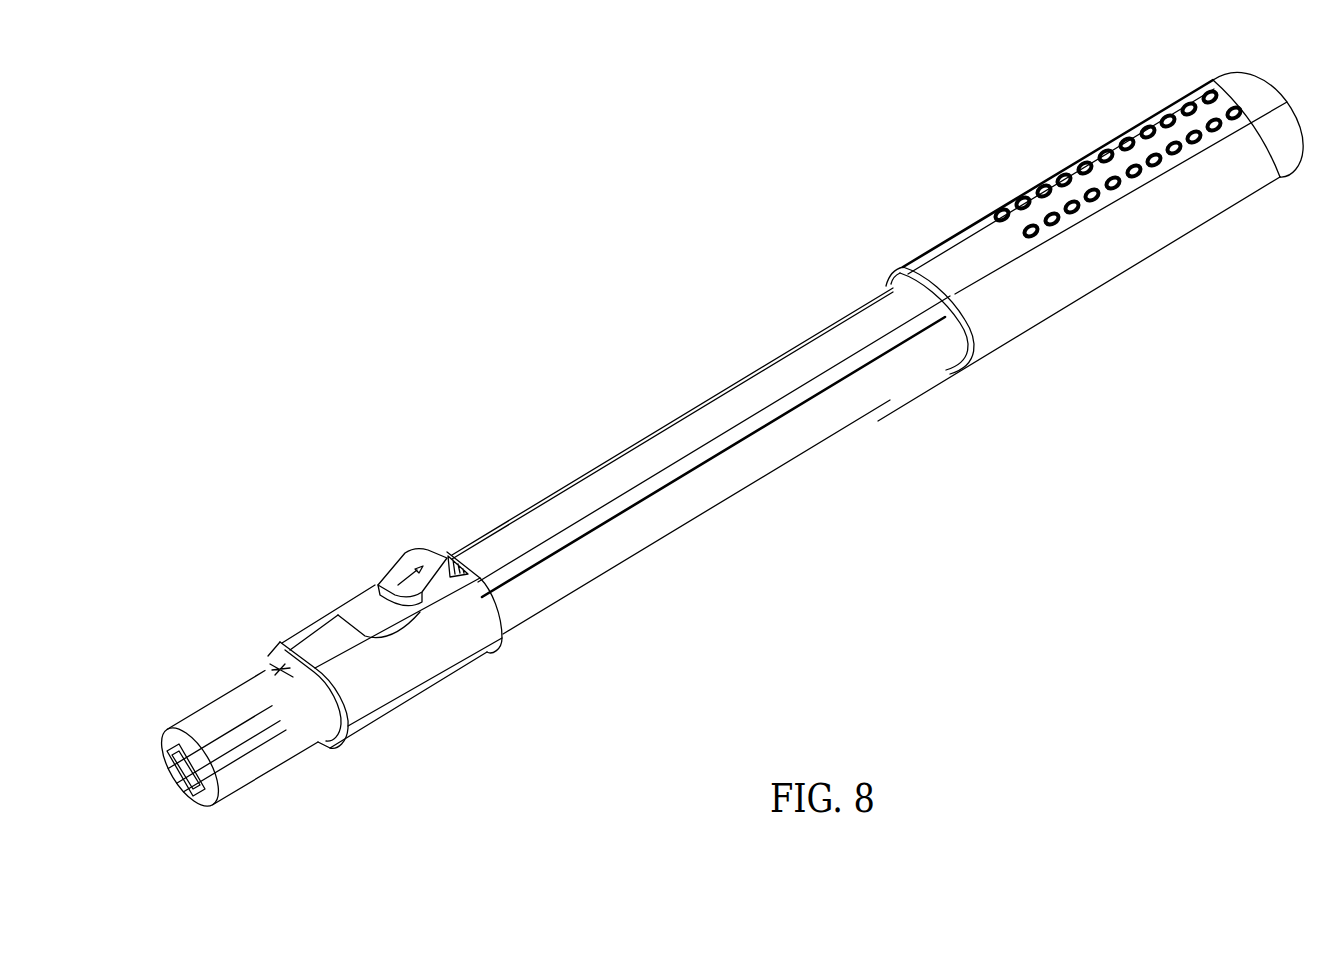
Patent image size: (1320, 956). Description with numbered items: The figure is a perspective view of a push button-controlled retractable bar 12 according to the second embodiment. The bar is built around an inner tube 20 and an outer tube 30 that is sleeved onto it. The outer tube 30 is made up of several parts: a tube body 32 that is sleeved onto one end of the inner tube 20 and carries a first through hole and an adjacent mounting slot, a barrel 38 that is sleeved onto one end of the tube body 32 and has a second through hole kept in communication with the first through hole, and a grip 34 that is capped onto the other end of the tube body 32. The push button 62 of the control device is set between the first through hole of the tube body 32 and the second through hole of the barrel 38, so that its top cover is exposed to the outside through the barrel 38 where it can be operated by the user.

The push button-controlled retractable bar 12 is at (417, 266).
The inner tube 20 is at (295, 780).
The outer tube 30 is at (1172, 269).
The tube body 32 is at (783, 447).
The grip 34 is at (1042, 292).
The barrel 38 is at (440, 662).
The push button 62 is at (392, 552).